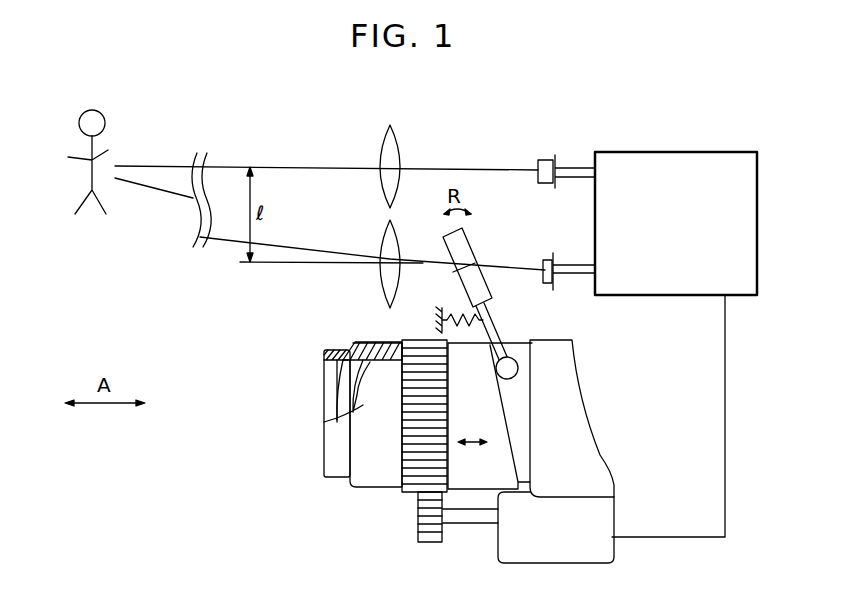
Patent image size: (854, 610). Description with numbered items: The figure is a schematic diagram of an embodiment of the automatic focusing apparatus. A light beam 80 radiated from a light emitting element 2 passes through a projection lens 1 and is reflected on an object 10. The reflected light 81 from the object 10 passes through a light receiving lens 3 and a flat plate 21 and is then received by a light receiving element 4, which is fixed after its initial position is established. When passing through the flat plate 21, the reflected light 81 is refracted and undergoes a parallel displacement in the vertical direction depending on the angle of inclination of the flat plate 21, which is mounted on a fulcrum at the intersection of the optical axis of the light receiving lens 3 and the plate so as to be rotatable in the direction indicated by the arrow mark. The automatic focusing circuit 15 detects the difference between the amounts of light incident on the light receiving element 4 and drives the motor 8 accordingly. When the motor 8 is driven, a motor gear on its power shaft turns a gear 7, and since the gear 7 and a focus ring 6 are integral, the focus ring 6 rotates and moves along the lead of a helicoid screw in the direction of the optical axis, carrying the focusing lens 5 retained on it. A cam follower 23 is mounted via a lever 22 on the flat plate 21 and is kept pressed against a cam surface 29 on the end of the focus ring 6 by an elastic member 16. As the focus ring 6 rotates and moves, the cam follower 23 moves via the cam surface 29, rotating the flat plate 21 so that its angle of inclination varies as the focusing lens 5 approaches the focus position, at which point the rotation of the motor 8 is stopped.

The projection lens 1 is at (386, 142).
The light emitting element 2 is at (544, 160).
The light receiving lens 3 is at (386, 282).
The light receiving element 4 is at (544, 258).
The focusing lens 5 is at (338, 388).
The focus ring 6 is at (333, 478).
The gear 7 is at (402, 448).
The motor 8 is at (497, 556).
The object 10 is at (91, 109).
The automatic focusing circuit 15 is at (706, 152).
The elastic member 16 is at (491, 303).
The flat plate 21 is at (470, 246).
The lever 22 is at (502, 335).
The cam follower 23 is at (518, 374).
The cam surface 29 is at (512, 452).
The light beam 80 is at (159, 165).
The reflected light 81 is at (156, 199).